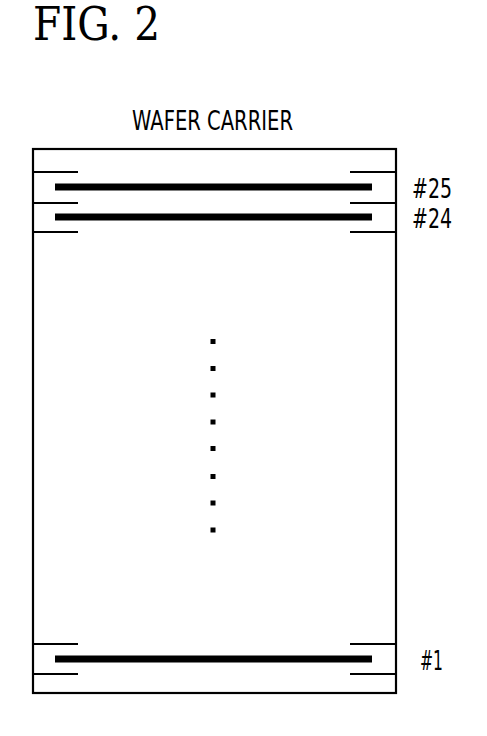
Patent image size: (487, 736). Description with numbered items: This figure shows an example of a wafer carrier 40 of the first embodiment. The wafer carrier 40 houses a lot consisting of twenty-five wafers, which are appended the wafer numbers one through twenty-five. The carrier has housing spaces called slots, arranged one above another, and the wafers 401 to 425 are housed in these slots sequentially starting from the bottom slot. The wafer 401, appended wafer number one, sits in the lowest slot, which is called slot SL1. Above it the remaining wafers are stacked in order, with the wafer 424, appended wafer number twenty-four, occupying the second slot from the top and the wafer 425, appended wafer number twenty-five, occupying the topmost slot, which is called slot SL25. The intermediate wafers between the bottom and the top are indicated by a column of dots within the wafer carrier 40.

The wafer carrier 40 is at (350, 148).
The wafer 401 is at (263, 654).
The wafer 424 is at (127, 223).
The wafer 425 is at (280, 192).